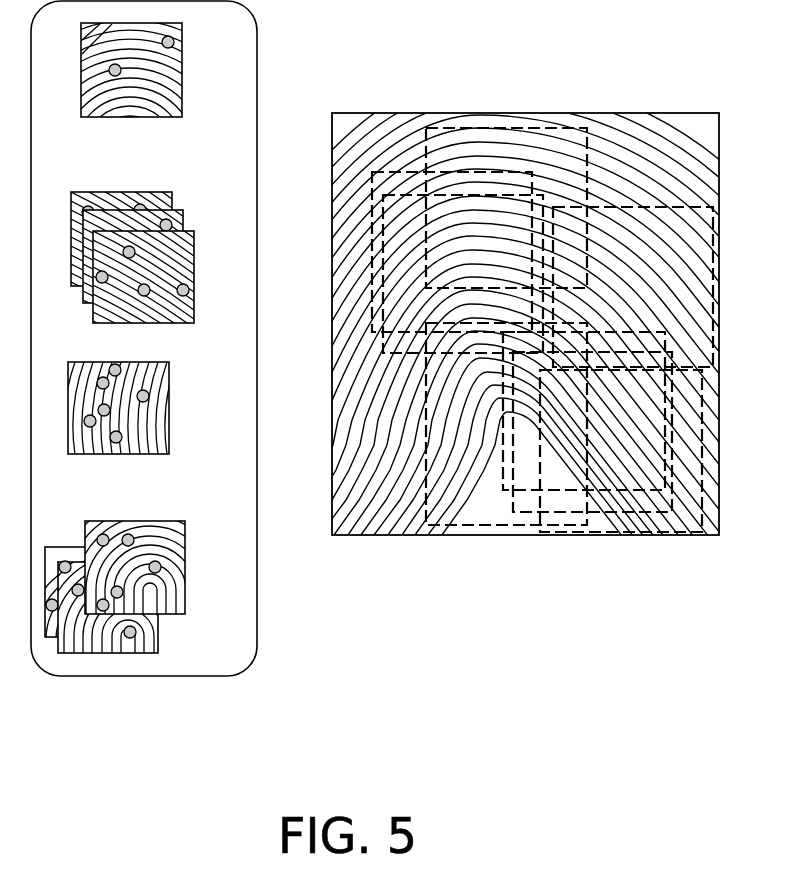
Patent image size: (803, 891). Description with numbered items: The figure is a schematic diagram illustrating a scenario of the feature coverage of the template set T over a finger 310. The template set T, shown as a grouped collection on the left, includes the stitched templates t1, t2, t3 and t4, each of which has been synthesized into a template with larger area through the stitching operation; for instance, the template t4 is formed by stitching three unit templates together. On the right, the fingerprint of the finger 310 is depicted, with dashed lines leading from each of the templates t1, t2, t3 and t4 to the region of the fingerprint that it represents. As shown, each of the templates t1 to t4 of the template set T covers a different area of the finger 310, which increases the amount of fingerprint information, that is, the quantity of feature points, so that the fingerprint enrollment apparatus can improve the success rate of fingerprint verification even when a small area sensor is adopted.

The finger 310 is at (647, 113).
The template set T is at (107, 677).
The template t1 is at (630, 267).
The template t2 is at (583, 420).
The template t3 is at (460, 445).
The template t4 is at (453, 267).